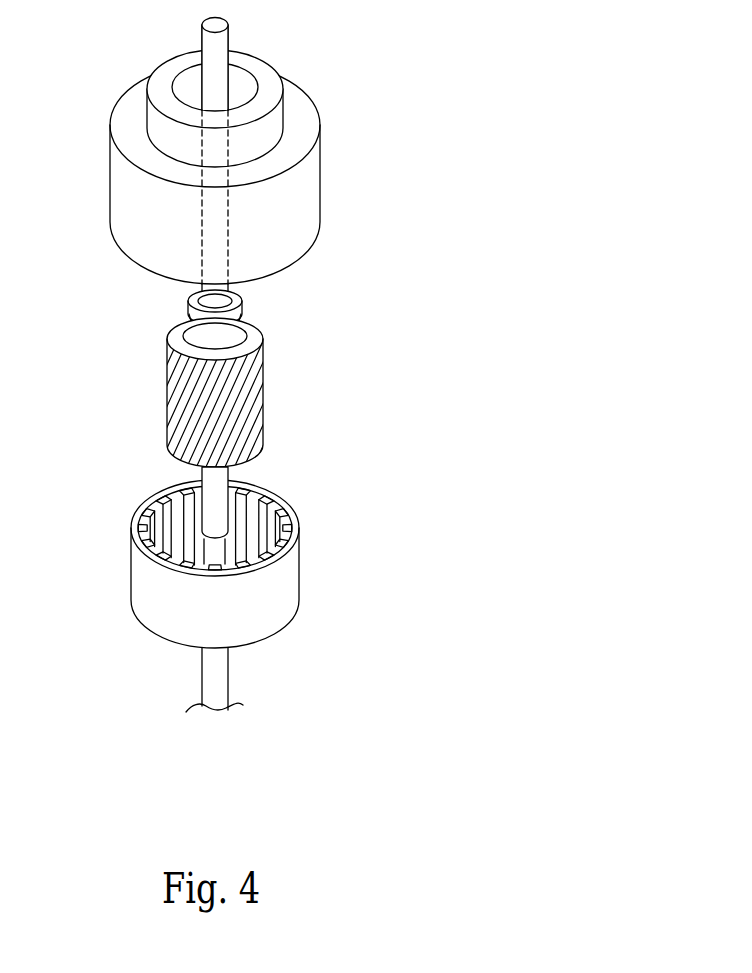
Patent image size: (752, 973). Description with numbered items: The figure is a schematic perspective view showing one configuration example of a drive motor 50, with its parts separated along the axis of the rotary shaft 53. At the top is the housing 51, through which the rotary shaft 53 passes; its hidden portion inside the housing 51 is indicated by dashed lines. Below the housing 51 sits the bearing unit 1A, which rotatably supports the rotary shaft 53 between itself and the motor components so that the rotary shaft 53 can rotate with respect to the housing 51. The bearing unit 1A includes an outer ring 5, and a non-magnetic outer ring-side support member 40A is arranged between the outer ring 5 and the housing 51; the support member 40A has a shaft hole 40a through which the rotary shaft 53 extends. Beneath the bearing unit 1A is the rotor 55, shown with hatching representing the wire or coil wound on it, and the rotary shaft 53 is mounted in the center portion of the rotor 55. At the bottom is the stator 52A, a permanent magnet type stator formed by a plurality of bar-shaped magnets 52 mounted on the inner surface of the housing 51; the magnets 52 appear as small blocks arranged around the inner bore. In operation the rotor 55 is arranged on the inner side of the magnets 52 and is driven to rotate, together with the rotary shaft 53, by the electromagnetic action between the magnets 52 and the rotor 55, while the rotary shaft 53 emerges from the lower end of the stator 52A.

The drive motor 50 is at (293, 365).
The housing 51 is at (303, 125).
The rotary shaft 53 is at (222, 41).
The bearing unit 1A is at (231, 371).
The outer ring-side support member 40A is at (190, 313).
The shaft hole of collar 40a is at (200, 295).
The outer ring 5 is at (183, 330).
The rotor 55 is at (263, 387).
The bar-shaped magnets 52 is at (242, 486).
The stator 52A is at (275, 546).